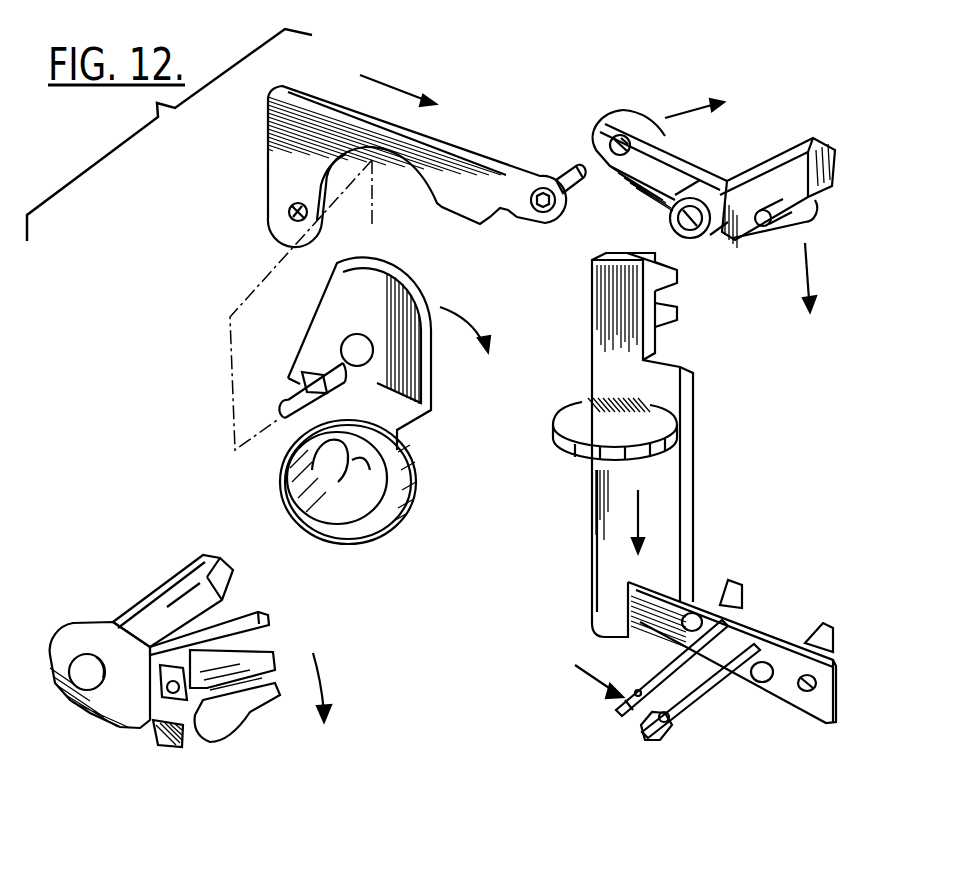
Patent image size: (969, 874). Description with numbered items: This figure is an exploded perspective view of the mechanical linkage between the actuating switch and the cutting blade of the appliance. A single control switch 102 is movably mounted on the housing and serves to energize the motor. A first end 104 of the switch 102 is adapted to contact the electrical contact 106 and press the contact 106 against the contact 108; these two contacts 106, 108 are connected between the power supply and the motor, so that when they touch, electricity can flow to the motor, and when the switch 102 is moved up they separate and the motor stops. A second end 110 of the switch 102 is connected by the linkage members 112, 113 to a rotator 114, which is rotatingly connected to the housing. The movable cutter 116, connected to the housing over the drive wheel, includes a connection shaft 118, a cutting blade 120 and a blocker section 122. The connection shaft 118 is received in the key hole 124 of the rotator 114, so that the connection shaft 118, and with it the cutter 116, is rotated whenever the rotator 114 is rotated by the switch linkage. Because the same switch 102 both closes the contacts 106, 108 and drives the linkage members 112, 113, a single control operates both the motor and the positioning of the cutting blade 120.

The control switch 102 is at (580, 407).
The first end 104 is at (607, 607).
The electrical contact 106 is at (627, 717).
The contact 108 is at (647, 727).
The second end 110 is at (605, 283).
The linkage member 112 is at (703, 155).
The linkage member 113 is at (457, 142).
The rotator 114 is at (358, 353).
The movable cutter 116 is at (95, 710).
The connection shaft 118 is at (183, 583).
The cutting blade 120 is at (177, 750).
The blocker section 122 is at (262, 610).
The key hole 124 is at (390, 503).